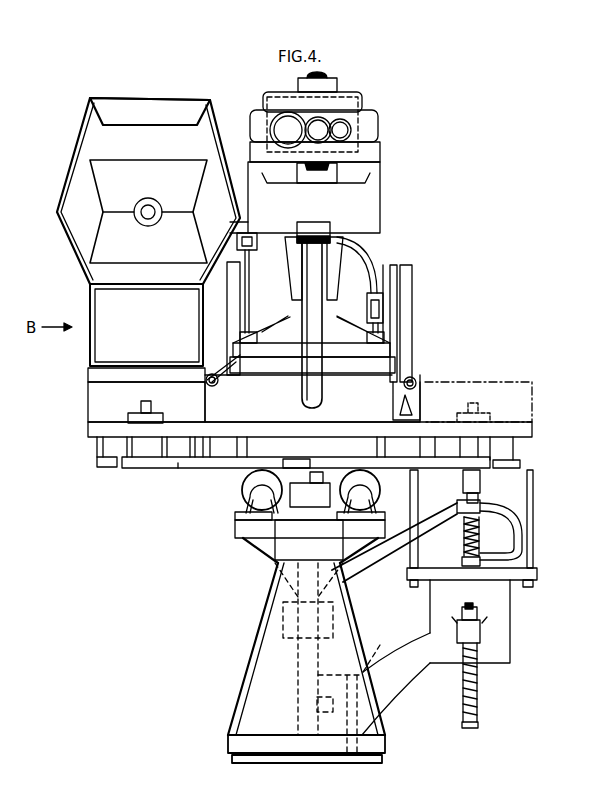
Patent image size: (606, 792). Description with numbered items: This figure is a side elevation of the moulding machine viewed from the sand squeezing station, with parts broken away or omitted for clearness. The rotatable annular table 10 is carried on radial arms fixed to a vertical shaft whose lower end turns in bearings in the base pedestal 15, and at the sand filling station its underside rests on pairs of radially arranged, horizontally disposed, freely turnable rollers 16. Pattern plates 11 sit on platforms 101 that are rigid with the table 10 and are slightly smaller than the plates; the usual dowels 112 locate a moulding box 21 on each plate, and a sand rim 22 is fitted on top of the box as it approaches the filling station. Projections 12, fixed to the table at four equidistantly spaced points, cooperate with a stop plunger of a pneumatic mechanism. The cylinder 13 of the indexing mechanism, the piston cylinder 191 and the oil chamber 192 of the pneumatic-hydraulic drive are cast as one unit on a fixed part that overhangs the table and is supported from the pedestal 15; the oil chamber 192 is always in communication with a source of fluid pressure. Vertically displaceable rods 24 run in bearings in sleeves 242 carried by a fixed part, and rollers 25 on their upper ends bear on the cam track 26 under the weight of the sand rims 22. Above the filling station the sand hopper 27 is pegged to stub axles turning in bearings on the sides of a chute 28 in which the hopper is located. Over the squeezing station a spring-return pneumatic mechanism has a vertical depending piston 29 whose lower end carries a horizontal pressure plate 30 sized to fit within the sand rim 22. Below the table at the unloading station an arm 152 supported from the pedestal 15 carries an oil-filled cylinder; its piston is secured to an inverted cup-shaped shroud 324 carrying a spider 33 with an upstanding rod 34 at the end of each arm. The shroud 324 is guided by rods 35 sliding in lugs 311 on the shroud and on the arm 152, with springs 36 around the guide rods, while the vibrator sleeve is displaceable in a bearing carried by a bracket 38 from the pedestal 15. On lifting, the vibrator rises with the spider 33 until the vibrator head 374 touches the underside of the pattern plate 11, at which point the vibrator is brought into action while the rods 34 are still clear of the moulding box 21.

The annular table 10 is at (178, 463).
The pattern plates 11 is at (88, 428).
The projections 12 is at (97, 463).
The cylinder of the indexing mechanism 13 is at (287, 122).
The base pedestal 15 is at (263, 653).
The rollers 16 is at (238, 480).
The moulding box 21 is at (88, 400).
The sand rim 22 is at (88, 373).
The vertically displaceable rod 24 is at (250, 313).
The rollers 25 is at (241, 233).
The cam track 26 is at (272, 232).
The sand hopper 27 is at (155, 165).
The chute 28 is at (86, 262).
The piston 29 is at (332, 370).
The pressure plate 30 is at (282, 348).
The spider 33 is at (533, 568).
The upstanding rods 34 is at (419, 490).
The guide rods 35 is at (466, 726).
The springs 36 is at (482, 684).
The bracket 38 is at (385, 560).
The platforms 101 is at (97, 447).
The dowels 112 is at (148, 407).
The arm 152 is at (407, 642).
The piston cylinder 191 is at (350, 118).
The oil chamber 192 is at (322, 118).
The sleeves 242 is at (248, 343).
The lugs 311 is at (487, 633).
The inverted cup-shaped shroud 324 is at (512, 612).
The vibrator head 374 is at (481, 481).